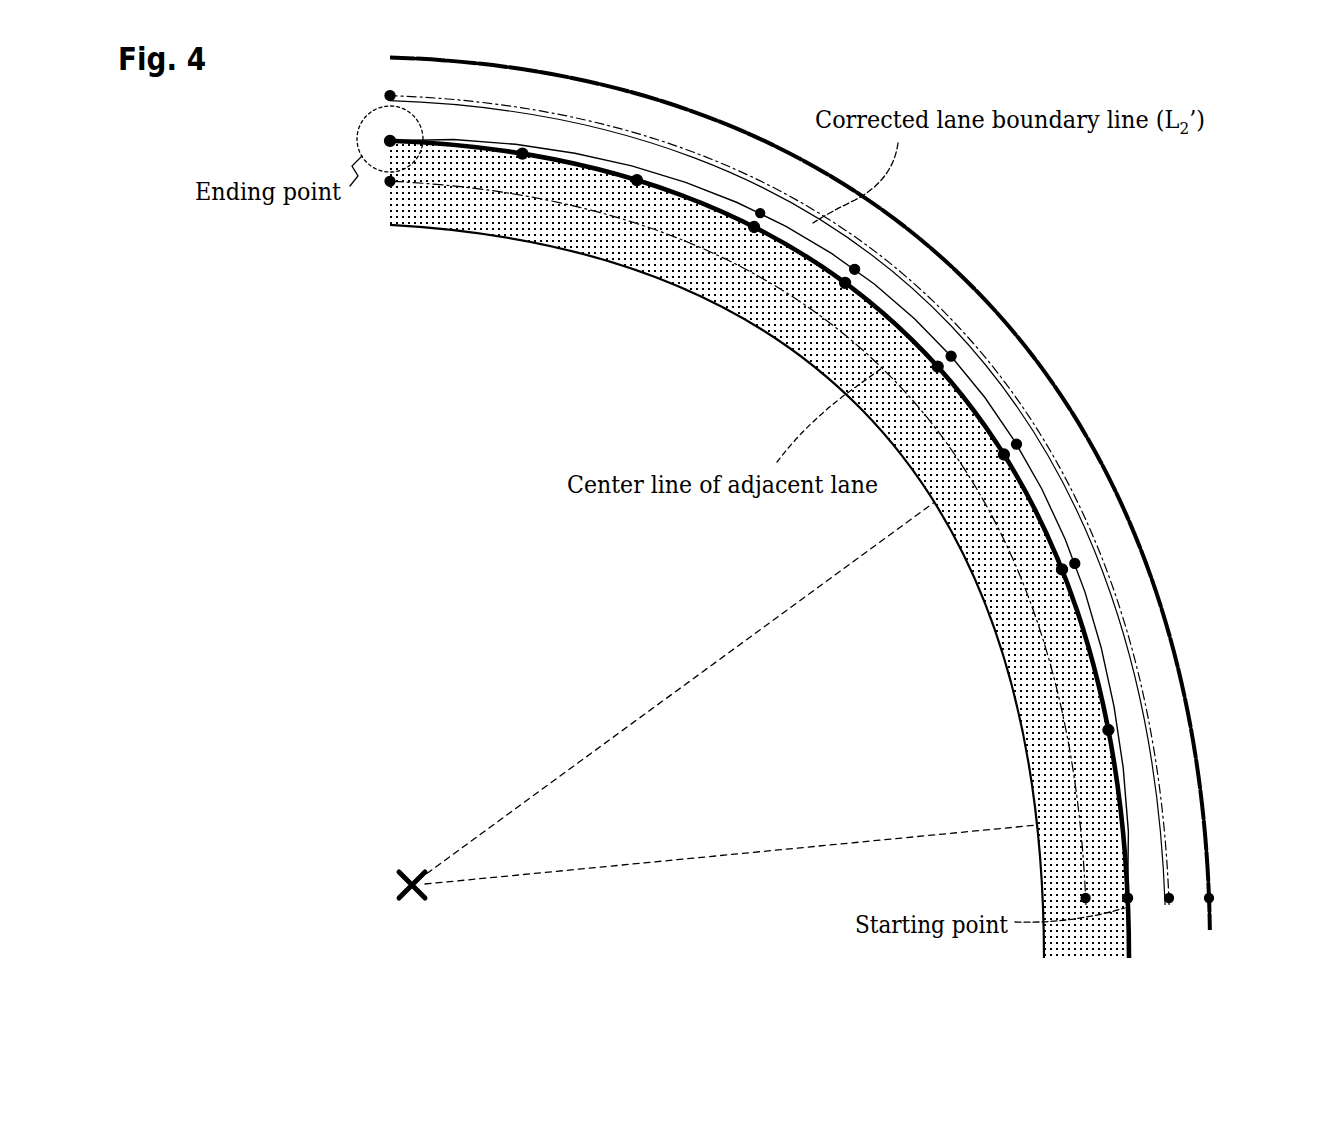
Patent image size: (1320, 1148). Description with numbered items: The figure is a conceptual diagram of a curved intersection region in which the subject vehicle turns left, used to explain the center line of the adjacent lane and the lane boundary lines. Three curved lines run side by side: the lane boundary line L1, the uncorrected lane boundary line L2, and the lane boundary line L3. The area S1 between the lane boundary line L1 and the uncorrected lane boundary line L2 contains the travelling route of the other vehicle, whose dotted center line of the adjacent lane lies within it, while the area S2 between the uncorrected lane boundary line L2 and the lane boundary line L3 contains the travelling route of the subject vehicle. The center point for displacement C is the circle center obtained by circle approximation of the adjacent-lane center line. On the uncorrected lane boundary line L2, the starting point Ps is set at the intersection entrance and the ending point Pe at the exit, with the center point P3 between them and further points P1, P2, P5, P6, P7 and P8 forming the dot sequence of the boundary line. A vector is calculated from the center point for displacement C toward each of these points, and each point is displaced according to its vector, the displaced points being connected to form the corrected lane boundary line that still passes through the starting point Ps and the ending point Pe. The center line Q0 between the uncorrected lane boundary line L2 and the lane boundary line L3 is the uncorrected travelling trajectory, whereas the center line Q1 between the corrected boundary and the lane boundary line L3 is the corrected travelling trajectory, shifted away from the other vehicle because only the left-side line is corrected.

The lane boundary line L1 is at (989, 614).
The uncorrected lane boundary line L2 is at (790, 262).
The lane boundary line L3 is at (958, 272).
The center line Q0 is at (1067, 462).
The center line Q1 is at (1092, 503).
The area S1 is at (1039, 848).
The area S2 is at (1188, 822).
The center point for displacement C is at (427, 898).
The ending point Pe is at (345, 131).
The starting point Ps is at (1175, 929).
The point on the lane boundary line P1 is at (1119, 744).
The point on the lane boundary line P2 is at (1070, 580).
The center point P3 is at (1007, 445).
The point on the lane boundary line P5 is at (858, 287).
The point on the lane boundary line P6 is at (760, 235).
The point on the lane boundary line P7 is at (646, 190).
The point on the lane boundary line P8 is at (533, 165).
The point Pc is at (951, 370).